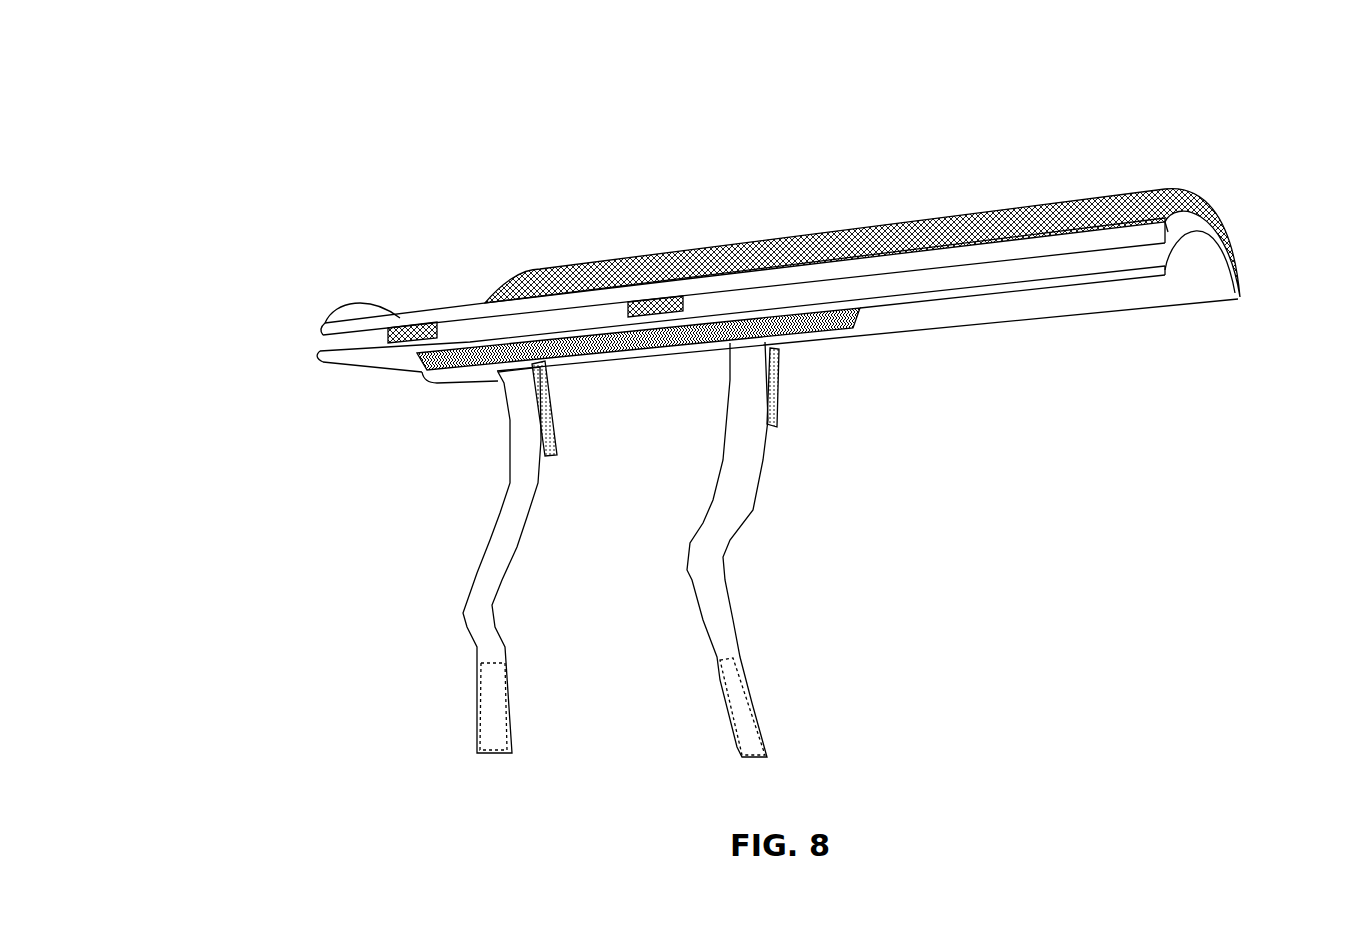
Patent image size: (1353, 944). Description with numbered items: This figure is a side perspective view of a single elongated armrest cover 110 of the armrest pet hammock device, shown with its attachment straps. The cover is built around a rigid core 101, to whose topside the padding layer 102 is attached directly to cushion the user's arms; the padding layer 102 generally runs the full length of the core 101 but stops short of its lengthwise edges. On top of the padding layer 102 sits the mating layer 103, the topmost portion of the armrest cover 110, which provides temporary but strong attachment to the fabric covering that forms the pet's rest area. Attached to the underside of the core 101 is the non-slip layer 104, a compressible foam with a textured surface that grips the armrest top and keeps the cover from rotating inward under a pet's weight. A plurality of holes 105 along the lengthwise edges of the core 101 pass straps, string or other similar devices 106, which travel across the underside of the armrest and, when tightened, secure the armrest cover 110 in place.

The elongated armrest cover 110 is at (412, 125).
The core 101 is at (1207, 288).
The padding layer 102 is at (438, 298).
The mating layer 103 is at (930, 228).
The non-slip layer 104 is at (425, 372).
The holes 105 is at (413, 316).
The straps, string or other similar devices 106 is at (498, 518).